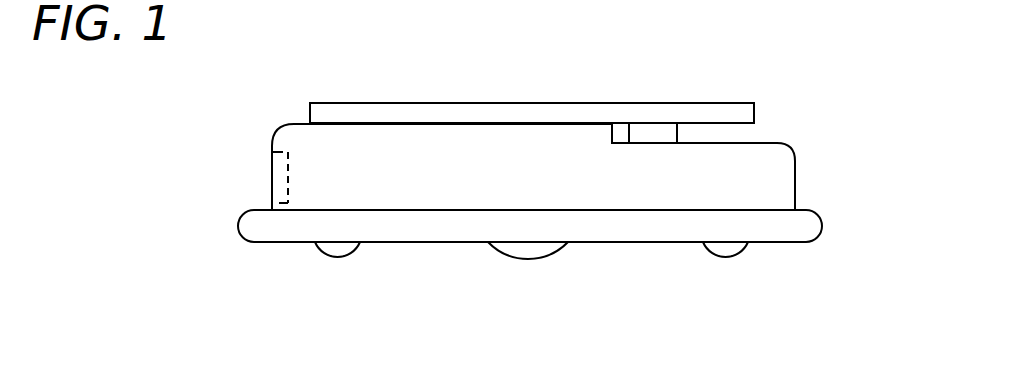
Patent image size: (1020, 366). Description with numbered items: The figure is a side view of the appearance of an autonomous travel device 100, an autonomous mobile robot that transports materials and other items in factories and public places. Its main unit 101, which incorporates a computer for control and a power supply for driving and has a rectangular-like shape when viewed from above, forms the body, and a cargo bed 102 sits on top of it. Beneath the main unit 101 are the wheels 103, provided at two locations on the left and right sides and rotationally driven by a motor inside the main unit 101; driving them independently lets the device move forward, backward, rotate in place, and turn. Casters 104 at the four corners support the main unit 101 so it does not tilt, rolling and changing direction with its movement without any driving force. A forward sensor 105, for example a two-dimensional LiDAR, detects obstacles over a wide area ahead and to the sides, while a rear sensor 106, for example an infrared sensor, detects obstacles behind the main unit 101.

The autonomous travel device 100 is at (822, 140).
The main unit 101 is at (222, 123).
The cargo bed 102 is at (547, 105).
The wheels 103 is at (537, 252).
The casters 104 is at (335, 252).
The forward sensor 105 is at (667, 133).
The rear sensor 106 is at (268, 171).